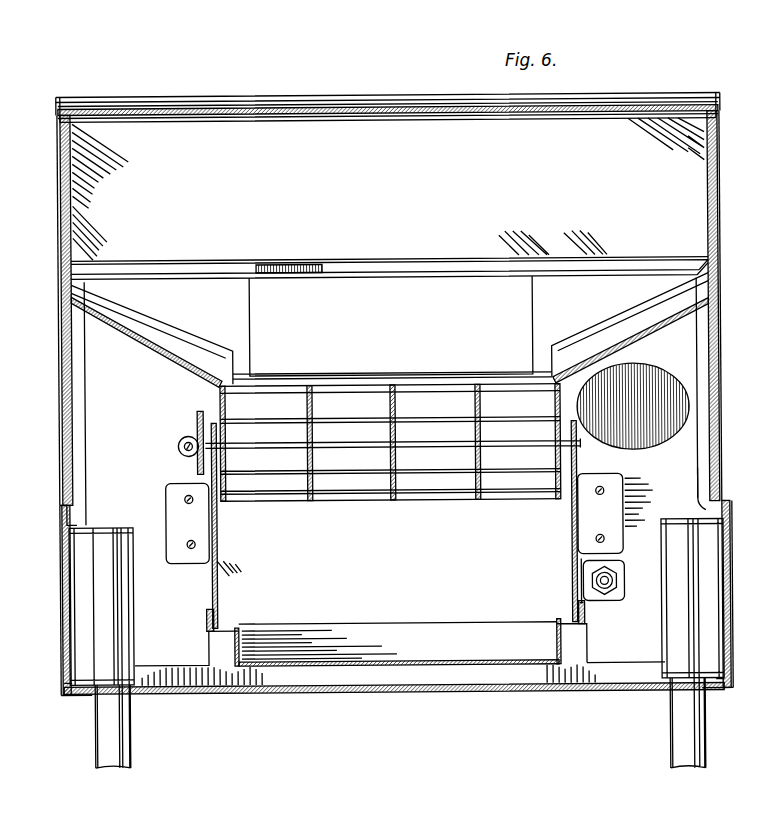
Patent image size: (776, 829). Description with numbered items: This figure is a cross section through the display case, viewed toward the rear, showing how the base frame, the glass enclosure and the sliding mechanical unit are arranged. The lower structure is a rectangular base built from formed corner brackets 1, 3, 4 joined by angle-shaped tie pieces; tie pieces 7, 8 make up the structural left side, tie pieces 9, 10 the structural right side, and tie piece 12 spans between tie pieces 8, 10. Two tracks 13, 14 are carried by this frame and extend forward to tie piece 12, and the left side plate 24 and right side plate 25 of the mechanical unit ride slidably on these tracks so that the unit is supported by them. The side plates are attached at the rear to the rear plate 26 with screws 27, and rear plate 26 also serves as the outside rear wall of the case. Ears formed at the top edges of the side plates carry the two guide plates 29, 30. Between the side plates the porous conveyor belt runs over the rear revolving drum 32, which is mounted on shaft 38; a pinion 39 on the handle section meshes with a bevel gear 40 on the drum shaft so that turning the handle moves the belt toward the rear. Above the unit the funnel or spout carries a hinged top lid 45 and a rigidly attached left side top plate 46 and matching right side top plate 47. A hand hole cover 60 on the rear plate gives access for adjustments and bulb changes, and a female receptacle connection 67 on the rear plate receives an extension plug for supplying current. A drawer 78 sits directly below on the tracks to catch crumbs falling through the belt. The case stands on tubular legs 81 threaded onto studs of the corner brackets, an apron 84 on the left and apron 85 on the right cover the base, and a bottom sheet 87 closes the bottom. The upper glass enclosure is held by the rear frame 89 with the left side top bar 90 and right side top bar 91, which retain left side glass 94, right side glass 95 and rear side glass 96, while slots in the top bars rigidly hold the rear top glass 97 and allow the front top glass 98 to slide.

The corner bracket 1 is at (3, 469).
The corner bracket 3 is at (660, 585).
The corner bracket 4 is at (132, 623).
The tie piece 7 is at (62, 532).
The tie piece 8 is at (62, 684).
The tie piece 9 is at (703, 518).
The tie piece 10 is at (724, 688).
The tie piece 12 is at (325, 678).
The track 13 is at (205, 625).
The track 14 is at (585, 625).
The left side plate 24 is at (238, 593).
The right side plate 25 is at (573, 520).
The rear plate 26 is at (680, 482).
The screw 27 is at (196, 546).
The guide plate 29 is at (160, 350).
The guide plate 30 is at (640, 334).
The revolving drum 32 is at (412, 502).
The shaft 38 is at (502, 446).
The pinion 39 is at (184, 436).
The bevel gear 40 is at (198, 418).
The hinged top lid 45 is at (392, 327).
The left side top plate 46 is at (152, 334).
The right chute 47 is at (630, 325).
The hand hole cover 60 is at (672, 380).
The female receptacle connection 67 is at (620, 595).
The drawer 78 is at (398, 642).
The tubular leg 81 is at (120, 726).
The apron 84 is at (61, 604).
The apron 85 is at (726, 594).
The bottom sheet 87 is at (247, 692).
The rear frame 89 is at (473, 100).
The left side top bar 90 is at (58, 102).
The right side top bar 91 is at (722, 98).
The left side glass 94 is at (66, 228).
The right side glass 95 is at (706, 211).
The rear side glass 96 is at (388, 189).
The rear top glass 97 is at (366, 113).
The front top glass 98 is at (322, 104).